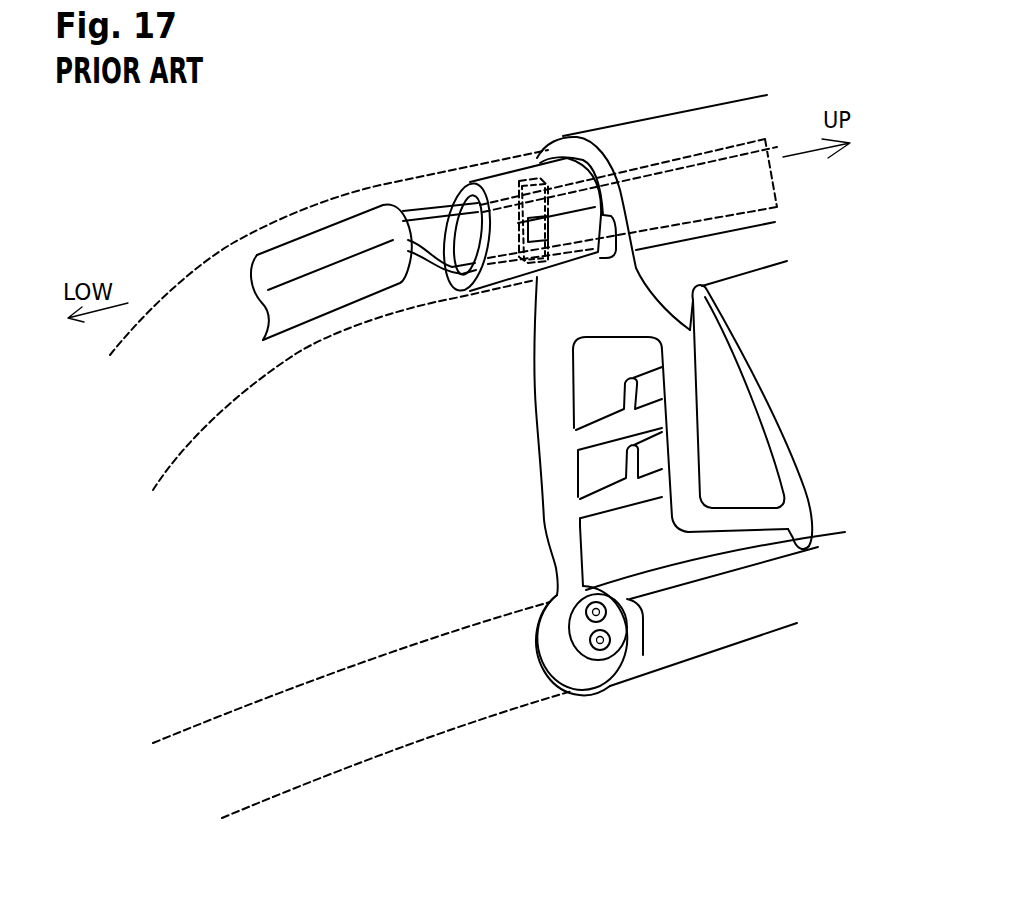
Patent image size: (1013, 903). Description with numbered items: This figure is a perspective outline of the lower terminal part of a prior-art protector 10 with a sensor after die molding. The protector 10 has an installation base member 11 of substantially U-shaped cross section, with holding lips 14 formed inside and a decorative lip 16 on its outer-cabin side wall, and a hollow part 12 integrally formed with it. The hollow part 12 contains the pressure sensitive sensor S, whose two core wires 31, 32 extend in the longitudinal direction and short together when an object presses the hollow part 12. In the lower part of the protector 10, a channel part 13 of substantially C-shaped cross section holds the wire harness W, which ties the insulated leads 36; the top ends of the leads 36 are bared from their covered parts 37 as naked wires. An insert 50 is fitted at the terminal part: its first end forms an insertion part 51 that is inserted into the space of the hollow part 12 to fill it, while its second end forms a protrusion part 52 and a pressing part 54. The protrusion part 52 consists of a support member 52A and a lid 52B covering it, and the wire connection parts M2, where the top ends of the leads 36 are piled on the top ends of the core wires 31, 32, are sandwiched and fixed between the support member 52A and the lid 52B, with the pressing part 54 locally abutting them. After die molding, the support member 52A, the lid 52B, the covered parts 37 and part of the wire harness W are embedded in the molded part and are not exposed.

The protector 10 is at (572, 397).
The installation base member 11 is at (628, 406).
The hollow part 12 is at (477, 433).
The channel part 13 is at (620, 666).
The holding lips 14 is at (592, 430).
The decorative lip 16 is at (750, 370).
The core wire 31 is at (615, 193).
The core wire 32 is at (598, 265).
The leads 36 is at (491, 378).
The covered parts 37 is at (425, 213).
The insert 50 is at (543, 224).
The insertion part 51 is at (723, 150).
The protrusion part 52 is at (503, 224).
The support member 52A is at (458, 186).
The lid 52B is at (468, 263).
The pressing part 54 is at (563, 222).
The wire connection parts M2 is at (528, 180).
The sensor (pressure sensitive sensor) S is at (477, 423).
The wire harness W is at (534, 389).